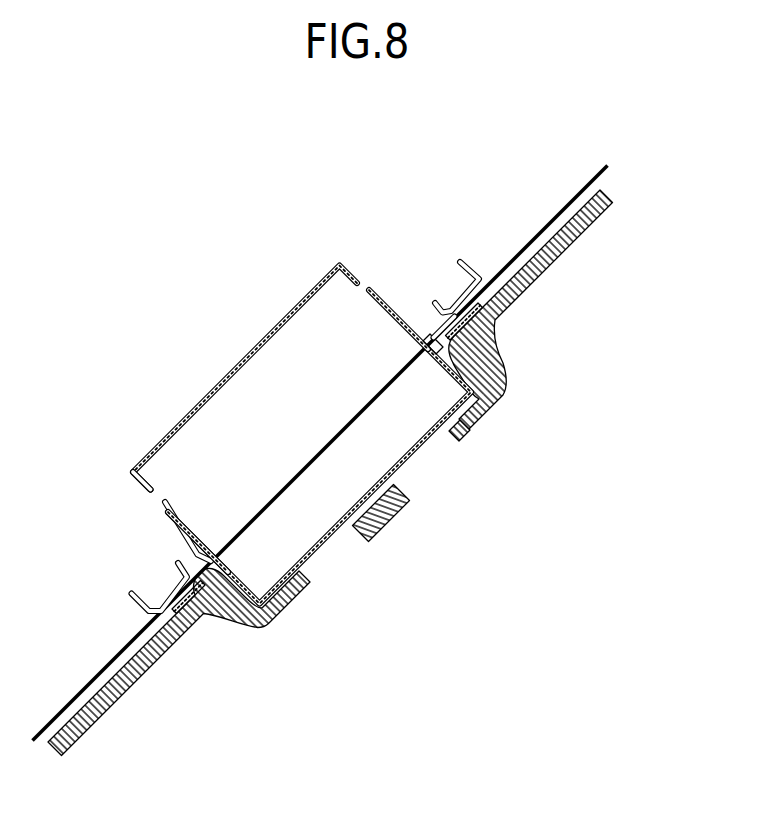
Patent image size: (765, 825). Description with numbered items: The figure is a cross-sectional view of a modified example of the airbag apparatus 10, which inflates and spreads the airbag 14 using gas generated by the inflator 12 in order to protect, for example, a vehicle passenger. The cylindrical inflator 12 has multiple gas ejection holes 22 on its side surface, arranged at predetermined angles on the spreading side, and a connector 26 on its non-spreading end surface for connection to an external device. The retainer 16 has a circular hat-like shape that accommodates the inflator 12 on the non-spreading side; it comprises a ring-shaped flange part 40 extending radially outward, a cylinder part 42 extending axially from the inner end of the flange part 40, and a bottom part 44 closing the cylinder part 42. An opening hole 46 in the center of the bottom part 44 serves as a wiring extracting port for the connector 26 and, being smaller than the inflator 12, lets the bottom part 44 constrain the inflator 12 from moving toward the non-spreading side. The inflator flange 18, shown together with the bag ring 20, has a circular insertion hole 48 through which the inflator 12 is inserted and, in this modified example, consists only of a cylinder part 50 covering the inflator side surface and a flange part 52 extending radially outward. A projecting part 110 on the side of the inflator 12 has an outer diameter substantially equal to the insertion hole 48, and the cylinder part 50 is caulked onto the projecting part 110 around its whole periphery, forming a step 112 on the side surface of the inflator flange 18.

The airbag apparatus 10 is at (297, 205).
The inflator 12 is at (232, 368).
The airbag 14 is at (560, 208).
The retainer 16 is at (560, 309).
The inflator flange 18 is at (412, 258).
The bag ring 20 is at (459, 262).
The gas ejection holes 22 is at (158, 502).
The connector 26 is at (397, 520).
The flange part 40 is at (548, 272).
The cylinder part 42 is at (483, 357).
The bottom part 44 is at (472, 416).
The opening hole 46 is at (455, 440).
The insertion hole 48 is at (208, 608).
The cylinder part 50 is at (388, 300).
The flange part 52 is at (428, 318).
The projecting part 110 is at (232, 570).
The step 112 is at (197, 560).